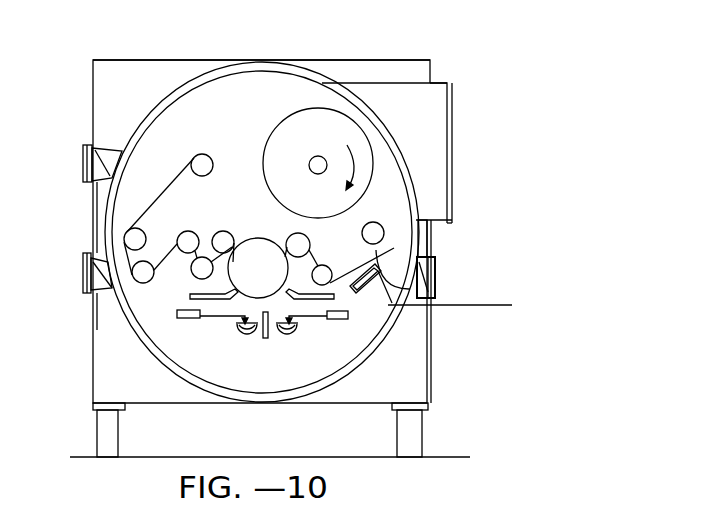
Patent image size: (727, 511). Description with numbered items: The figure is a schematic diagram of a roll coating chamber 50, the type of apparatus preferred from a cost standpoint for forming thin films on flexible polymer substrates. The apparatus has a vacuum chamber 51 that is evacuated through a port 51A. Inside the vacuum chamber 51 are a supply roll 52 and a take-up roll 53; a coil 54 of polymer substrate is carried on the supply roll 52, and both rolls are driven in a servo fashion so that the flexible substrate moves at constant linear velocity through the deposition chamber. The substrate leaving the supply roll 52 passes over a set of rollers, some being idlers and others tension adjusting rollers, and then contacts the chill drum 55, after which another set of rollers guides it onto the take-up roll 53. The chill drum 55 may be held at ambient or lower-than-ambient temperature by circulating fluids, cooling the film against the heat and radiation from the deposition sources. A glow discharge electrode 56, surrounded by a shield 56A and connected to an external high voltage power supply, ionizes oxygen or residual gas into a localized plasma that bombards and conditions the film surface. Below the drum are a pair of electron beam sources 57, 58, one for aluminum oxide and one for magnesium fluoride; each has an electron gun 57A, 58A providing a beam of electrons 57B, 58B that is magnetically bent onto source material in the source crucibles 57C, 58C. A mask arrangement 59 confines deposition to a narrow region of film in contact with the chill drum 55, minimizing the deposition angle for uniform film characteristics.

The roll coating chamber 50 is at (25, 140).
The vacuum chamber 51 is at (356, 62).
The port 51A is at (436, 177).
The supply roll 52 is at (313, 167).
The take-up roll 53 is at (202, 156).
The coil 54 is at (353, 138).
The chill drum 55 is at (256, 253).
The glow discharge electrode 56 is at (416, 245).
The shield 56A is at (430, 286).
The electron beam source 57 is at (225, 360).
The electron gun 57A is at (177, 313).
The beam of electrons 57B is at (207, 318).
The source crucible 57C is at (247, 337).
The electron beam source 58 is at (328, 360).
The electron gun 58A is at (348, 318).
The beam of electrons 58B is at (322, 320).
The source crucible 58C is at (290, 337).
The mask arrangement 59 is at (190, 295).